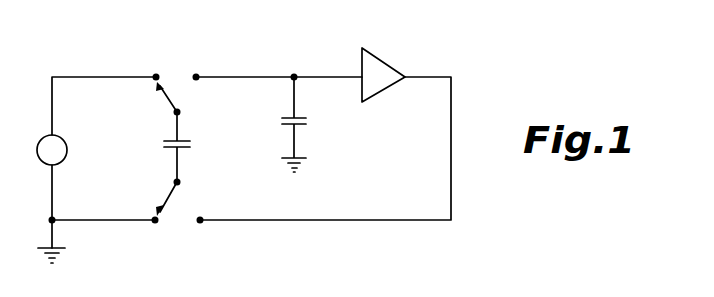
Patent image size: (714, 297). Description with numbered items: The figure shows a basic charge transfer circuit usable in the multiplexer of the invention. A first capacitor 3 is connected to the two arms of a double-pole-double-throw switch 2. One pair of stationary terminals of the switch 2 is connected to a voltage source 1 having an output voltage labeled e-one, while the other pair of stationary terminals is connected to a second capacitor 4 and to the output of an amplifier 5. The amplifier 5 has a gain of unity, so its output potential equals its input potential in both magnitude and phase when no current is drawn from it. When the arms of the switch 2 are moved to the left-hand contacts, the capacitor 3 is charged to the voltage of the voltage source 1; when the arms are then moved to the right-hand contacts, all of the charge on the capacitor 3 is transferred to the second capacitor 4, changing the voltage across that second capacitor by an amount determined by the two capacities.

The voltage source 1 is at (68, 137).
The double-pole-double-throw switch 2 is at (166, 200).
The capacitor 3 is at (182, 141).
The second capacitor 4 is at (289, 117).
The amplifier 5 is at (388, 57).